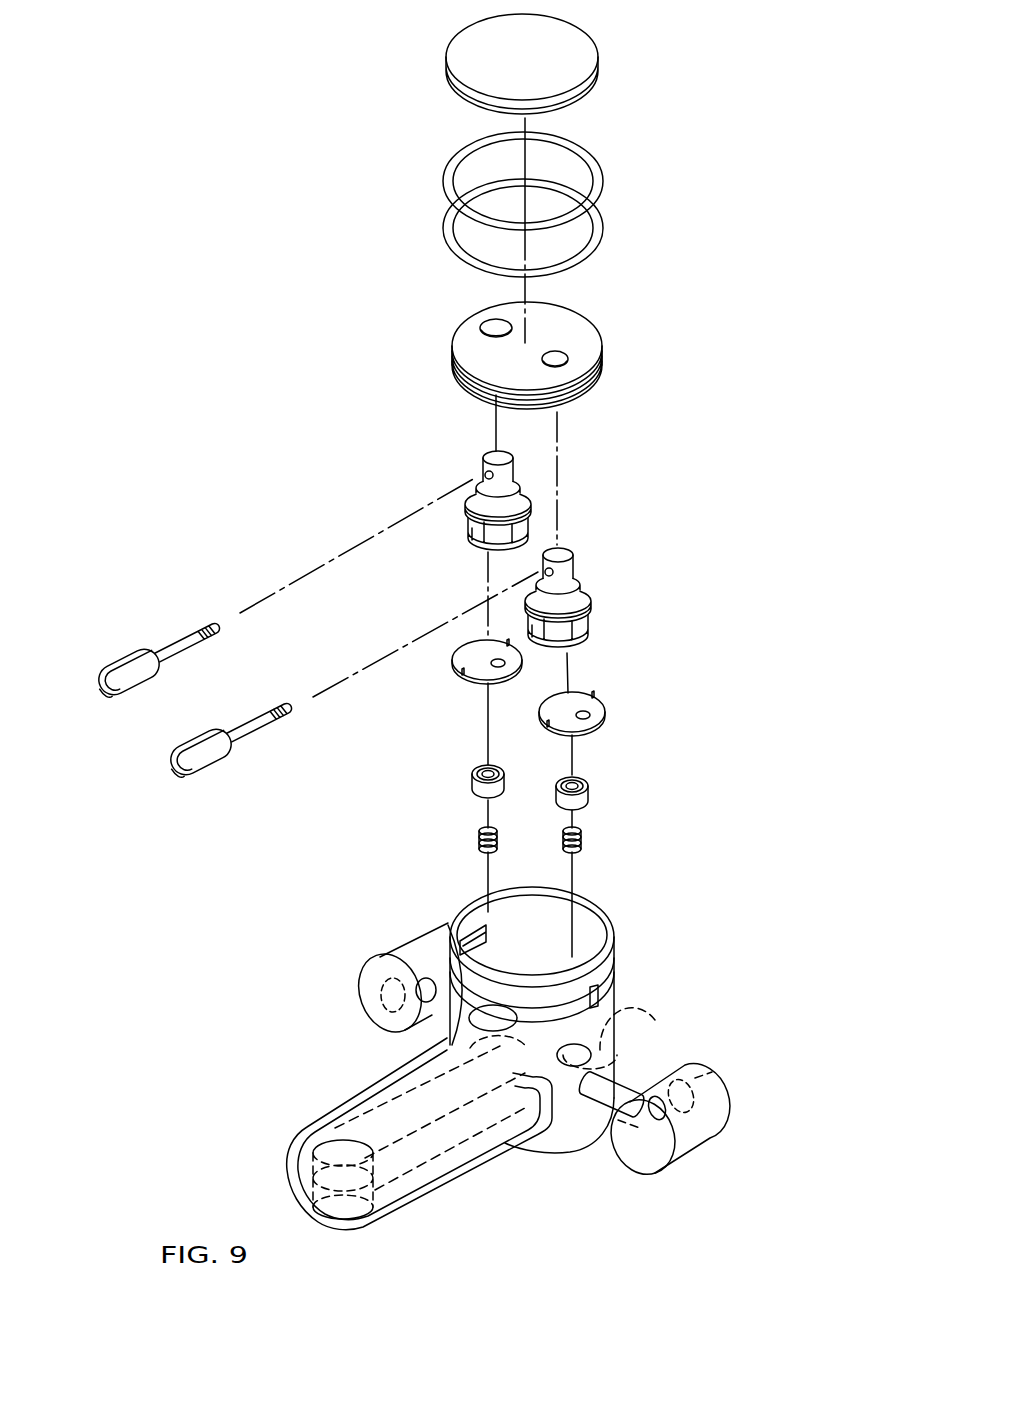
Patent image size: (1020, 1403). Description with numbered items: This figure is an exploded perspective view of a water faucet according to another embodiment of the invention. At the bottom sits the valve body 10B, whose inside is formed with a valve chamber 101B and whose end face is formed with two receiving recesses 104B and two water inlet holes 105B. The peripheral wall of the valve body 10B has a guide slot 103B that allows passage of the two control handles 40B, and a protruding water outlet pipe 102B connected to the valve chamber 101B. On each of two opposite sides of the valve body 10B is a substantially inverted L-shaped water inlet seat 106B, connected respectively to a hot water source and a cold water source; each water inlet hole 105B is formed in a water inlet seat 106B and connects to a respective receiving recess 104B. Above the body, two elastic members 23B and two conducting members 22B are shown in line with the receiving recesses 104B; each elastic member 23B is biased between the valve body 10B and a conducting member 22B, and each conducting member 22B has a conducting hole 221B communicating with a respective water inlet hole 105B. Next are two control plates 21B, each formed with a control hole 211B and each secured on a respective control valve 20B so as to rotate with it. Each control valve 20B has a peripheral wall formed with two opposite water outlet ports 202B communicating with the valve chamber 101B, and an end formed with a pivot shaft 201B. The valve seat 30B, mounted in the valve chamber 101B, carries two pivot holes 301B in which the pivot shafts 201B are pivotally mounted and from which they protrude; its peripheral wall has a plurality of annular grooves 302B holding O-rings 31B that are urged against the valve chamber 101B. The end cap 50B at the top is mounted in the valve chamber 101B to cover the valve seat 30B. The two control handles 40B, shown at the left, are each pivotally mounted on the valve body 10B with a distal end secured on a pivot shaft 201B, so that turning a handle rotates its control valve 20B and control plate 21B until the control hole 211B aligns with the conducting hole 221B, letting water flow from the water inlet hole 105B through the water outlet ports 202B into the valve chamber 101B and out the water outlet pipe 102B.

The valve body 10B is at (506, 1059).
The valve chamber 101B is at (586, 925).
The water outlet pipe 102B is at (325, 1122).
The guide slot 103B is at (597, 995).
The receiving recesses 104B is at (650, 1022).
The water inlet holes 105B is at (708, 1070).
The water inlet seat 106B is at (690, 1155).
The control valves 20B is at (533, 549).
The pivot shaft 201B is at (562, 553).
The water outlet ports 202B is at (574, 628).
The control plates 21B is at (534, 694).
The control hole 211B is at (648, 713).
The conducting members 22B is at (497, 788).
The conducting hole 221B is at (378, 784).
The elastic members 23B is at (584, 842).
The valve seat 30B is at (606, 360).
The pivot holes 301B is at (562, 363).
The annular grooves 302B is at (573, 366).
The O-rings 31B is at (445, 224).
The control handles 40B is at (168, 782).
The end cap 50B is at (603, 87).